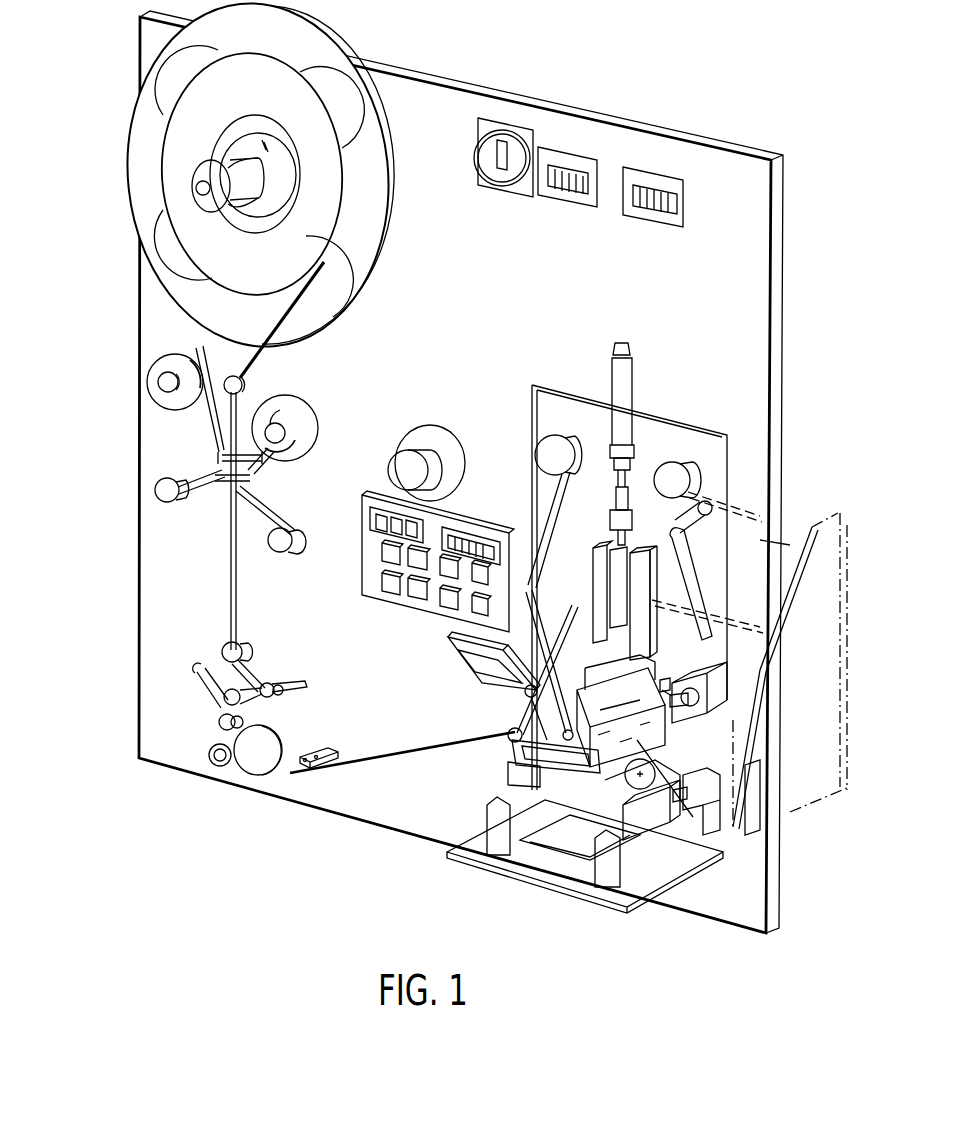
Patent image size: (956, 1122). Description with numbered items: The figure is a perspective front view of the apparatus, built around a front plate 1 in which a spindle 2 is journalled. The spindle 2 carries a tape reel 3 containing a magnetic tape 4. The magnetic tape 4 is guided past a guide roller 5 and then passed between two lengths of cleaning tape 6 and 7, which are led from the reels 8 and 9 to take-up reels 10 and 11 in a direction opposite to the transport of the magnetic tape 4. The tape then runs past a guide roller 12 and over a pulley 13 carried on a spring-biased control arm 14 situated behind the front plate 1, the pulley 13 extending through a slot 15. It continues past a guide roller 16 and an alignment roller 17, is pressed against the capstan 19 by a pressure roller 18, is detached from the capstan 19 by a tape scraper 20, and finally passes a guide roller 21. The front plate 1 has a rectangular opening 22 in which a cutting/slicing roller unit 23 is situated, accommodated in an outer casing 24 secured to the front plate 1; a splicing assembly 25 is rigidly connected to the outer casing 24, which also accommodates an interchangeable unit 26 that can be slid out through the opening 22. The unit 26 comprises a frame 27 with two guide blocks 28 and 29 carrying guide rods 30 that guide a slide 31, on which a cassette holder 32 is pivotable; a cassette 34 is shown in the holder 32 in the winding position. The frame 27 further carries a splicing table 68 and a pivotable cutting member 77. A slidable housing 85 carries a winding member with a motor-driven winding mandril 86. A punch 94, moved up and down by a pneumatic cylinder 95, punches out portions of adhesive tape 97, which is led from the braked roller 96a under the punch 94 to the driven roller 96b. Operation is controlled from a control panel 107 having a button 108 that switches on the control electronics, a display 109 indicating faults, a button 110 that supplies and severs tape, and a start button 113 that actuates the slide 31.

The front plate 1 is at (162, 304).
The spindle 2 is at (203, 170).
The tape reel 3 is at (195, 117).
The magnetic tape 4 is at (255, 370).
The guide roller 5 is at (232, 380).
The cleaning tape 6 is at (168, 407).
The cleaning tape 7 is at (270, 470).
The reel 8 is at (160, 492).
The reel 9 is at (274, 550).
The take-up reel 10 is at (280, 432).
The take-up reel 11 is at (160, 382).
The guide roller 12 is at (222, 652).
The pulley 13 is at (268, 697).
The control arm 14 is at (287, 682).
The slot 15 is at (295, 685).
The guide roller 16 is at (226, 698).
The alignment roller 17 is at (219, 722).
The pressure roller 18 is at (210, 758).
The capstan 19 is at (252, 768).
The tape scraper 20 is at (316, 750).
The guide roller 21 is at (508, 735).
The rectangular opening 22 is at (712, 438).
The cutting/slicing roller unit 23 is at (788, 800).
The outer casing 24 is at (800, 790).
The splicing assembly 25 is at (710, 472).
The interchangeable unit 26 is at (645, 860).
The frame 27 is at (550, 870).
The guide block 28 is at (608, 872).
The guide block 29 is at (500, 846).
The guide rods 30 is at (722, 800).
The slide 31 is at (640, 825).
The cassette holder 32 is at (530, 765).
The cassette 34 is at (482, 668).
The splicing table 68 is at (665, 792).
The cutting member 77 is at (698, 729).
The housing 85 is at (718, 676).
The winding mandril 86 is at (700, 683).
The punch 94 is at (600, 548).
The pneumatic cylinder 95 is at (625, 385).
The roller 96a is at (668, 470).
The roller 96b is at (548, 455).
The adhesive tape 97 is at (690, 562).
The control panel 107 is at (401, 573).
The button 108 is at (448, 570).
The display 109 is at (375, 533).
The button 110 is at (480, 575).
The start button 113 is at (418, 560).